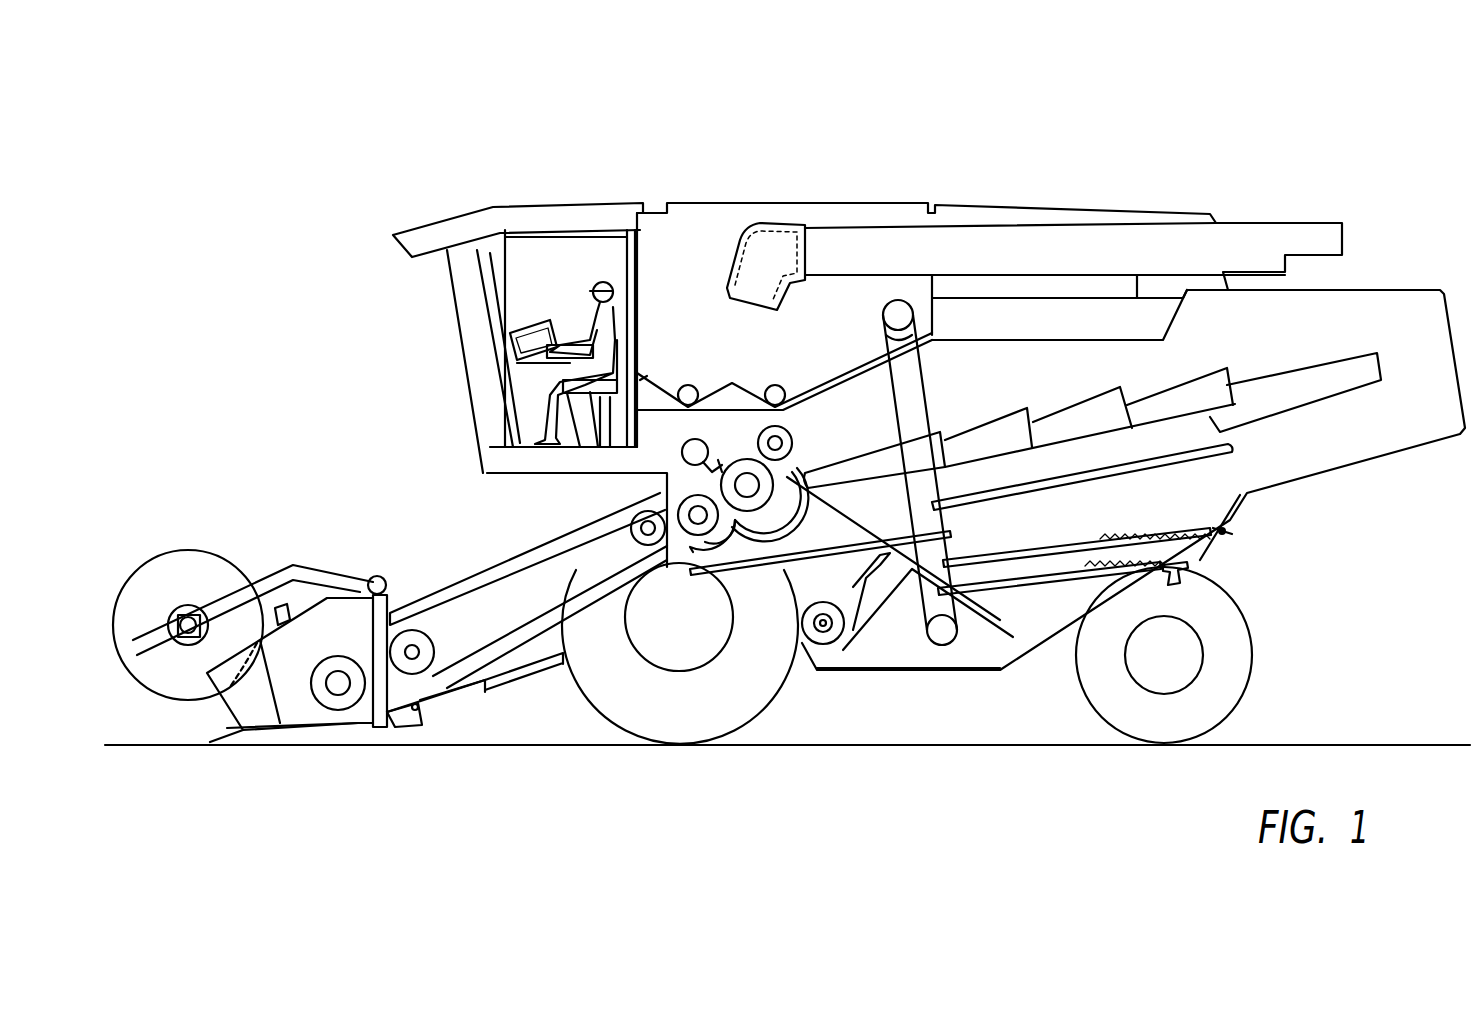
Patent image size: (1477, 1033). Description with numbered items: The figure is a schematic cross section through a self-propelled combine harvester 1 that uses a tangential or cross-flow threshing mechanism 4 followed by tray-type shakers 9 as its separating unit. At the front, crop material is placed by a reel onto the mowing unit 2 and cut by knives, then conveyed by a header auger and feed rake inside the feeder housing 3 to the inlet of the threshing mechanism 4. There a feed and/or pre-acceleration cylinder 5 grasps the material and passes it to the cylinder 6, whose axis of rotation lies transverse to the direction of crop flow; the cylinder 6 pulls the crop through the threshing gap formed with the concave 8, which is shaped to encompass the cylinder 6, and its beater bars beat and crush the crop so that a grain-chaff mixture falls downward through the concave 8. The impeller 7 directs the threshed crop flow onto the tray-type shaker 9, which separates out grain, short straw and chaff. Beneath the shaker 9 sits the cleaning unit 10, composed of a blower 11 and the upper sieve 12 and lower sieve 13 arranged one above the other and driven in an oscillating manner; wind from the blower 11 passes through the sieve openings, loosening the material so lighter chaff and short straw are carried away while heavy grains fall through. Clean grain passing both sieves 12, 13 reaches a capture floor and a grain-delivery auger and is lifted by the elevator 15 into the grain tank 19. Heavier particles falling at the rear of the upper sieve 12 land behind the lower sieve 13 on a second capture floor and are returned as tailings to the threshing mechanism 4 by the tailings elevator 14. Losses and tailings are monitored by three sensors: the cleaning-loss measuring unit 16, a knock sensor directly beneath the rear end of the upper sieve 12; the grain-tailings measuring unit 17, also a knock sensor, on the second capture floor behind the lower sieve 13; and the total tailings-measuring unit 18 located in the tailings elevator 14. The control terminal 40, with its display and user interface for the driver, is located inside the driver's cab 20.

The combine harvester 1 is at (411, 190).
The mowing unit 2 is at (285, 528).
The feeder housing 3 is at (480, 572).
The threshing mechanism 4 is at (695, 482).
The feed and/or pre-acceleration cylinder 5 is at (690, 513).
The cylinder 6 is at (748, 468).
The impeller 7 is at (783, 436).
The concave 8 is at (703, 576).
The tray-type shaker 9 is at (1338, 370).
The cleaning unit 10 is at (938, 705).
The blower 11 is at (800, 626).
The upper sieve 12 is at (1060, 540).
The lower sieve 13 is at (1020, 560).
The tailings elevator 14 is at (822, 508).
The elevator 15 is at (920, 410).
The cleaning-loss measuring unit 16 is at (1232, 533).
The grain-tailings measuring unit 17 is at (1180, 585).
The total tailings-measuring unit 18 is at (712, 455).
The grain tank 19 is at (694, 332).
The driver's cab 20 is at (567, 250).
The control terminal 40 is at (520, 345).